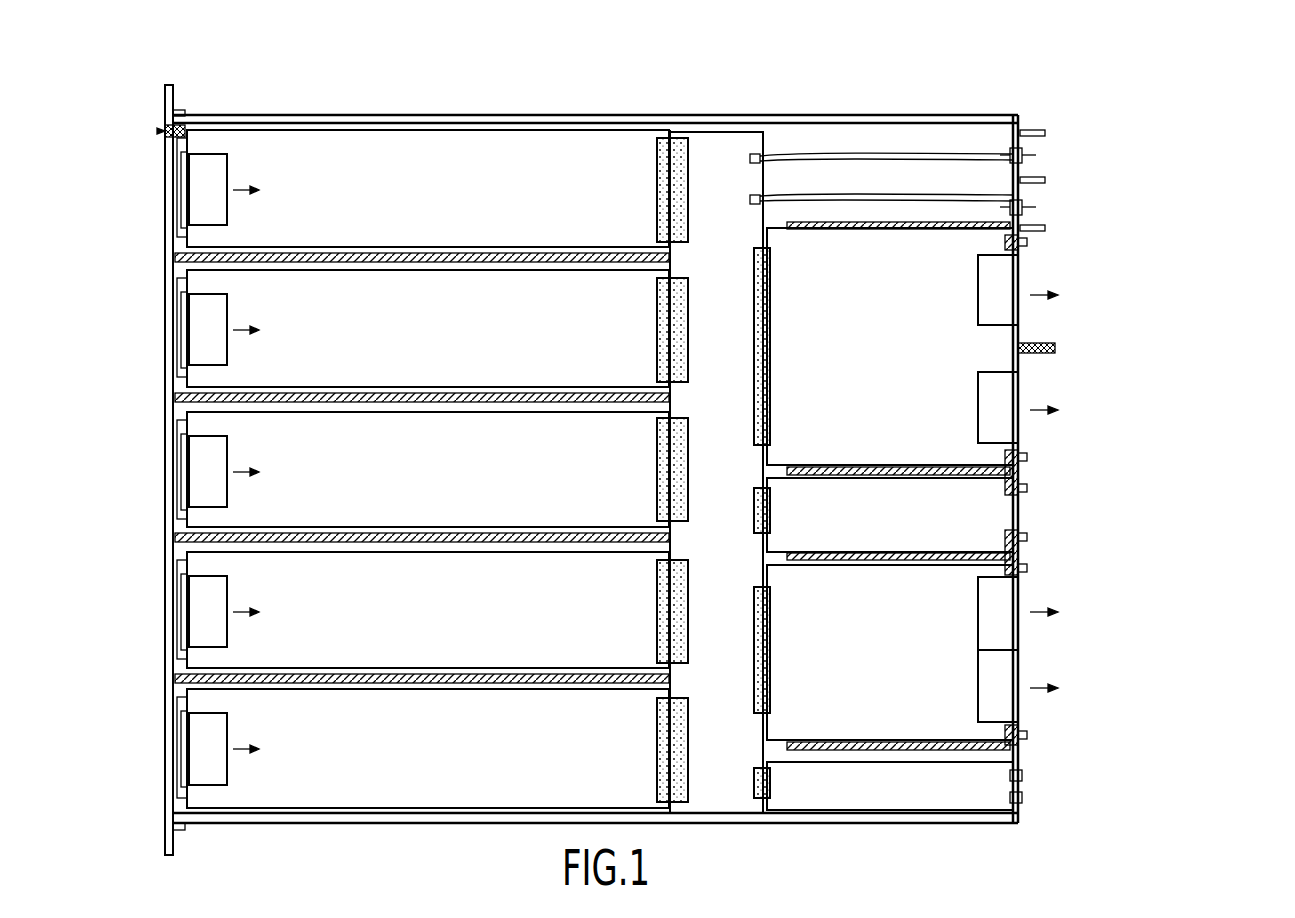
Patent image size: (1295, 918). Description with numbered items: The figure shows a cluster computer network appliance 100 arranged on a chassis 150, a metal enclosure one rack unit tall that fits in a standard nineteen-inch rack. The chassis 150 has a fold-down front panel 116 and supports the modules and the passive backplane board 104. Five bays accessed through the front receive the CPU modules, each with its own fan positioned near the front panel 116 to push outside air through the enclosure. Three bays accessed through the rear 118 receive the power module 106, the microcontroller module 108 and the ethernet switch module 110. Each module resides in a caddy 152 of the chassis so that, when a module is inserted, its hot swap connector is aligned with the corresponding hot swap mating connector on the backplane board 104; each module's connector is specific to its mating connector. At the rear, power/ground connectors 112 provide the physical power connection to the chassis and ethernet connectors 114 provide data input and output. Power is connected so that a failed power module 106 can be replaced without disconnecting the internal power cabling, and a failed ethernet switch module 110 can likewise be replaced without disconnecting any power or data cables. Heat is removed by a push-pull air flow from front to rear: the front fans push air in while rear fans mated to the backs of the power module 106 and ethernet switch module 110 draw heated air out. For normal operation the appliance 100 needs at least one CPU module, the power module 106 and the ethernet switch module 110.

The cluster computer network appliance 100 is at (1127, 105).
The passive backplane board 104 is at (725, 566).
The power module 106 is at (872, 375).
The microcontroller module 108 is at (918, 515).
The ethernet switch module 110 is at (898, 692).
The power/ground connectors 112 is at (1235, 232).
The ethernet connectors 114 is at (1205, 777).
The front panel 116 is at (107, 545).
The rear 118 is at (1195, 497).
The chassis 150 is at (683, 823).
The caddy 152 is at (183, 132).